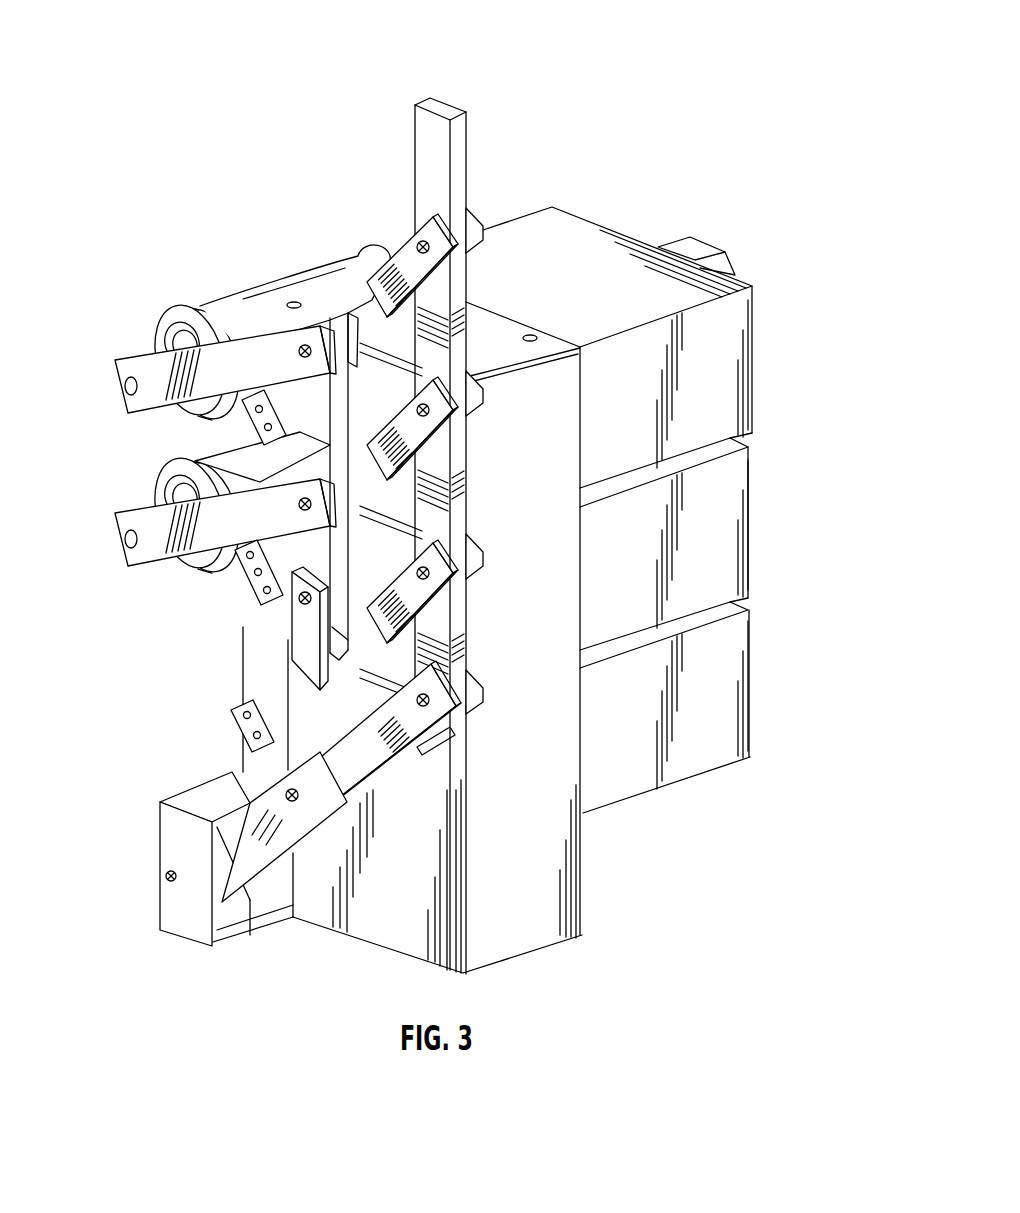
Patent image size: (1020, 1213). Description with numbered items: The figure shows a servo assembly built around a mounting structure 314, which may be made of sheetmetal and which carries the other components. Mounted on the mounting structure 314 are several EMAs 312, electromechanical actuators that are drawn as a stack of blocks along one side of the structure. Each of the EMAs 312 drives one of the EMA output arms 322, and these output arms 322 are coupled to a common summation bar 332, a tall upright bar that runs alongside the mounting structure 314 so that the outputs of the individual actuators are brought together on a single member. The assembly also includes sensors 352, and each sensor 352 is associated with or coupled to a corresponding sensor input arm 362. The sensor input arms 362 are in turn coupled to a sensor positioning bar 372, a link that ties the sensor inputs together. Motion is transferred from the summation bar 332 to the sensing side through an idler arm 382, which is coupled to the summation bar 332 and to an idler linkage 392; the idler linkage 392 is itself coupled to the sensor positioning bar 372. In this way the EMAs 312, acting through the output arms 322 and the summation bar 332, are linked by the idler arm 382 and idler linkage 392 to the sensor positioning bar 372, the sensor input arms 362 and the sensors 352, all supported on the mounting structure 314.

The EMAs 312 is at (754, 358).
The mounting structure 314 is at (583, 885).
The EMA output arms 322 is at (460, 262).
The summation bar 332 is at (468, 148).
The sensors 352 is at (217, 305).
The sensor input arms 362 is at (120, 387).
The sensor positioning bar 372 is at (312, 548).
The idler arm 382 is at (237, 860).
The idler linkage 392 is at (307, 640).